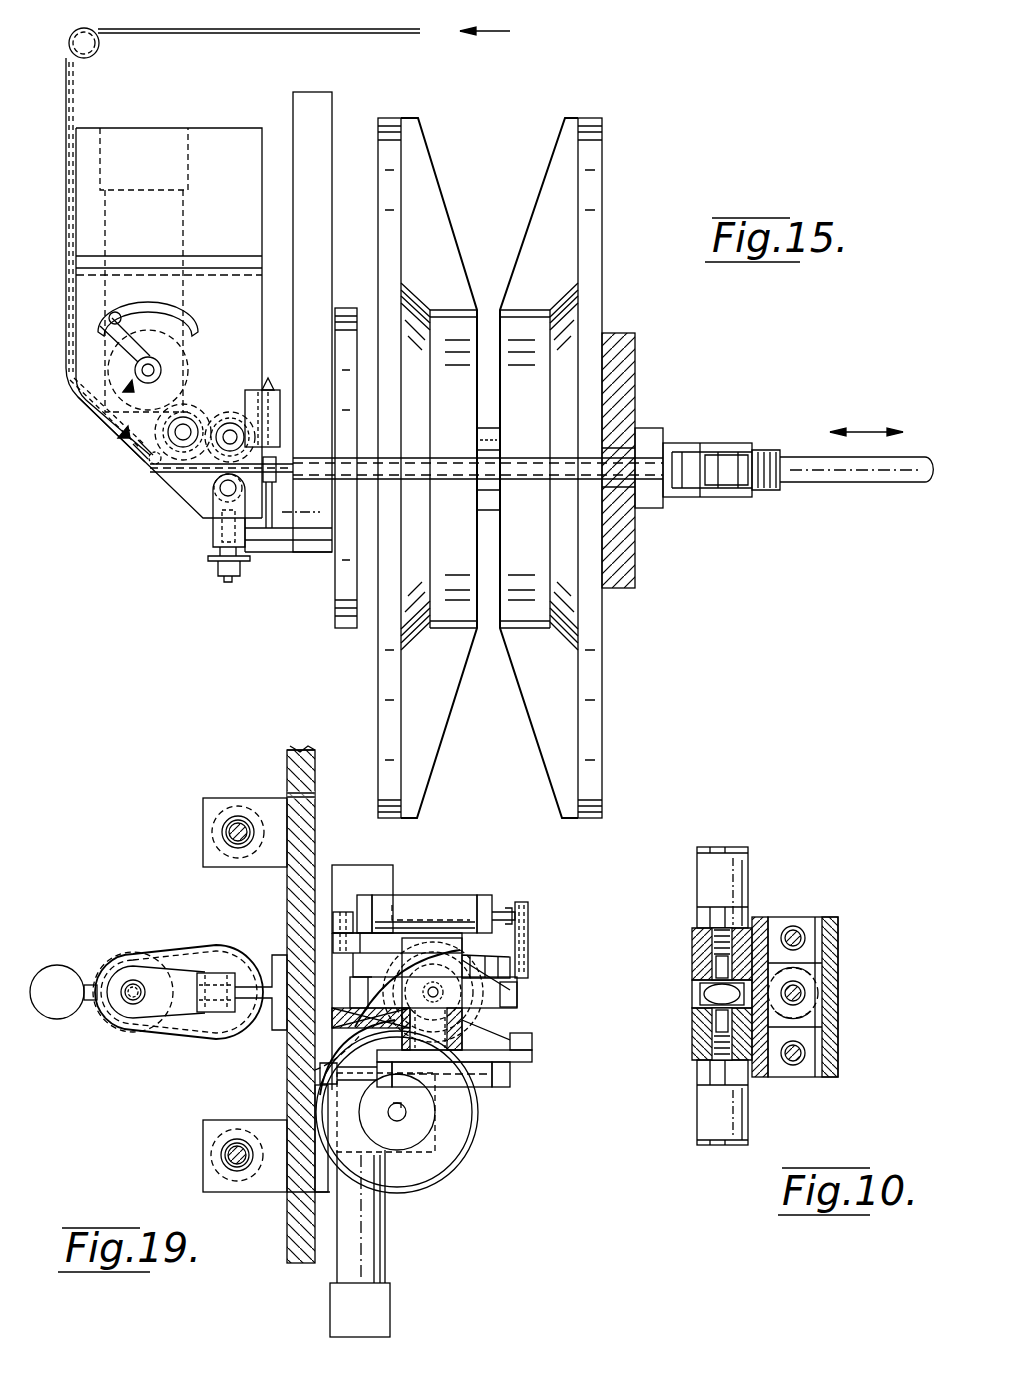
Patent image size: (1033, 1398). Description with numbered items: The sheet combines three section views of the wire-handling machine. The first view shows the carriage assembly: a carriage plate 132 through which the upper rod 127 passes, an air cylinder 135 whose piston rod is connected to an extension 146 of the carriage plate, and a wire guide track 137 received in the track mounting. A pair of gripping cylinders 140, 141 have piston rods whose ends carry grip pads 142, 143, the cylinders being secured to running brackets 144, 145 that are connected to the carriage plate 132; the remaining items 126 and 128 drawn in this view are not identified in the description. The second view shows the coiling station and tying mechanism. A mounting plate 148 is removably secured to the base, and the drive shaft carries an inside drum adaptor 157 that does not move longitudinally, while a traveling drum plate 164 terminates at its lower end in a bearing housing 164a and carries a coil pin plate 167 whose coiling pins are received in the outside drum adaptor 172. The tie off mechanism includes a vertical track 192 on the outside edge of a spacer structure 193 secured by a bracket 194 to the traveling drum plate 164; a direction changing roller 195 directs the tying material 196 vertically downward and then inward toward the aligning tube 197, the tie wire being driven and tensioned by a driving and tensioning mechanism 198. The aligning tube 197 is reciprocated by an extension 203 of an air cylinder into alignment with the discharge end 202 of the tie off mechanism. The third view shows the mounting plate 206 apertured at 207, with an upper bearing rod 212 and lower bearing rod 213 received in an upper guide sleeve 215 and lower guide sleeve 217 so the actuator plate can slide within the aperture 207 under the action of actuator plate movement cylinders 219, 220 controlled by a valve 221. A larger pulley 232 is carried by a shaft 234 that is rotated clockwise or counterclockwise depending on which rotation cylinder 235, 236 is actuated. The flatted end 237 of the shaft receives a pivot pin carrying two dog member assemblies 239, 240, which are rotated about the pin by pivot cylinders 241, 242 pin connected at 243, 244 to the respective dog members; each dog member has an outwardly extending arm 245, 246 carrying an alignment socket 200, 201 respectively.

In FIG. 10, the mounting block 126 is at (838, 937).
In FIG. 10, the upper rod 127 is at (797, 935).
In FIG. 10, the lower screw 128 is at (793, 1065).
In FIG. 10, the carriage plate 132 is at (760, 920).
In FIG. 10, the air cylinder 135 is at (812, 1010).
In FIG. 10, the wire guide track 137 is at (700, 995).
In FIG. 10, the gripping cylinder 140 is at (748, 862).
In FIG. 10, the gripping cylinder 141 is at (740, 1145).
In FIG. 10, the grip pad 142 is at (715, 963).
In FIG. 10, the grip pad 143 is at (712, 1027).
In FIG. 10, the running bracket 144 is at (695, 935).
In FIG. 10, the running bracket 145 is at (697, 1052).
In FIG. 10, the extension 146 is at (808, 985).
In FIG. 15, the mounting plate 148 is at (637, 370).
In FIG. 15, the inside drum adaptor 157 is at (602, 136).
In FIG. 15, the traveling drum plate 164 is at (333, 97).
In FIG. 15, the bearing housing 164a is at (262, 555).
In FIG. 15, the coil pin plate 167 is at (345, 308).
In FIG. 15, the outside drum adaptor 172 is at (400, 120).
In FIG. 15, the vertical track 192 is at (76, 110).
In FIG. 15, the spacer structure 193 is at (253, 105).
In FIG. 15, the bracket 194 is at (254, 390).
In FIG. 15, the direction changing roller 195 is at (100, 50).
In FIG. 15, the tying material 196 is at (398, 14).
In FIG. 15, the aligning tube 197 is at (455, 462).
In FIG. 15, the driving and tensioning mechanism 198 is at (125, 462).
In FIG. 19, the alignment socket 200 is at (272, 1040).
In FIG. 19, the alignment socket 201 is at (518, 992).
In FIG. 15, the discharge end 202 is at (272, 482).
In FIG. 15, the extension 203 is at (857, 475).
In FIG. 19, the mounting plate 206 is at (288, 756).
In FIG. 19, the aperture 207 is at (295, 760).
In FIG. 19, the upper bearing rod 212 is at (228, 838).
In FIG. 19, the lower bearing rod 213 is at (228, 1150).
In FIG. 19, the upper guide sleeve 215 is at (203, 808).
In FIG. 19, the lower guide sleeve 217 is at (203, 1178).
In FIG. 19, the actuator plate movement cylinder 219 is at (140, 1038).
In FIG. 19, the actuator plate movement cylinder 220 is at (205, 1042).
In FIG. 19, the valve 221 is at (50, 1007).
In FIG. 19, the larger pulley 232 is at (432, 1188).
In FIG. 19, the shaft 234 is at (405, 1118).
In FIG. 19, the rotation cylinder 235 is at (378, 868).
In FIG. 19, the rotation cylinder 236 is at (385, 1267).
In FIG. 19, the flatted end 237 is at (470, 1005).
In FIG. 19, the dog member assembly 239 is at (512, 967).
In FIG. 19, the dog member assembly 240 is at (512, 1070).
In FIG. 19, the pivot cylinder 241 is at (458, 902).
In FIG. 19, the pivot cylinder 242 is at (495, 1095).
In FIG. 19, the pin connection 243 is at (530, 940).
In FIG. 19, the pin connection 244 is at (320, 1092).
In FIG. 19, the outwardly extending arm 245 is at (335, 962).
In FIG. 19, the outwardly extending arm 246 is at (502, 1002).